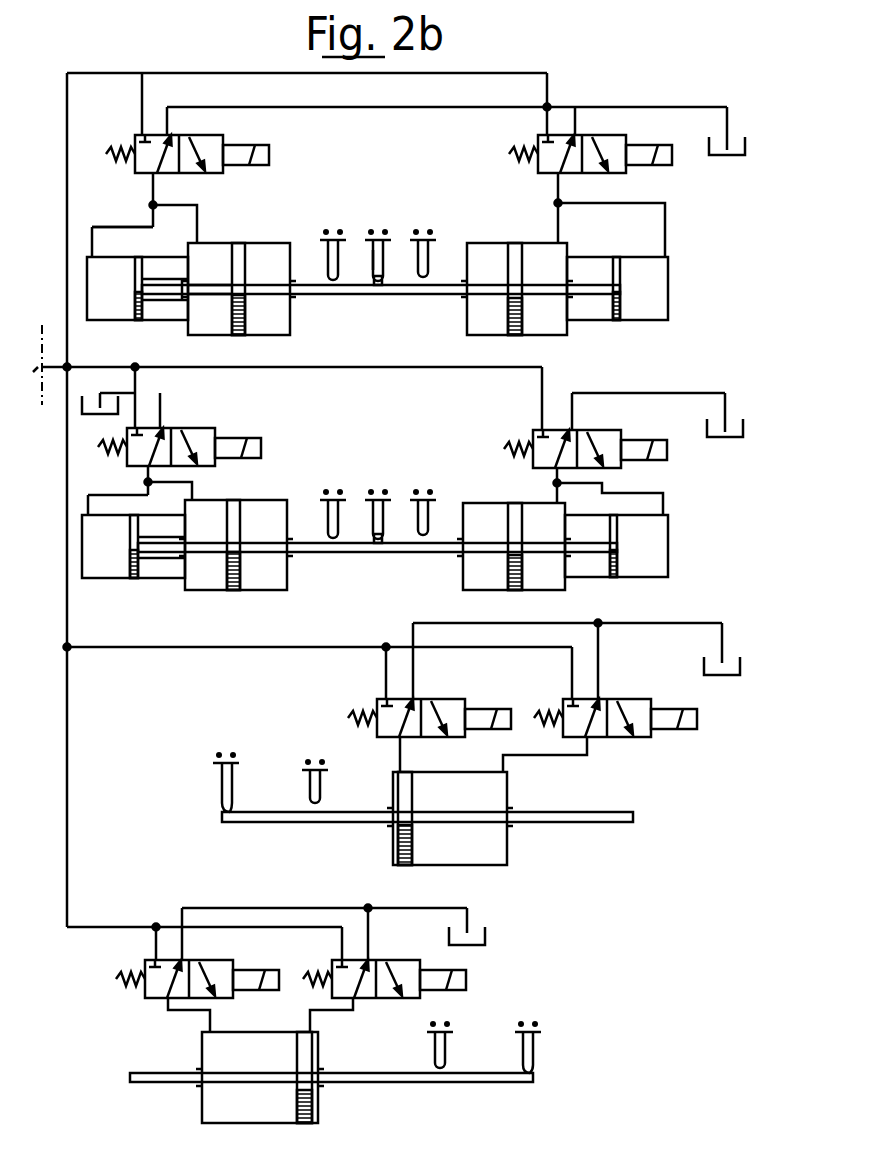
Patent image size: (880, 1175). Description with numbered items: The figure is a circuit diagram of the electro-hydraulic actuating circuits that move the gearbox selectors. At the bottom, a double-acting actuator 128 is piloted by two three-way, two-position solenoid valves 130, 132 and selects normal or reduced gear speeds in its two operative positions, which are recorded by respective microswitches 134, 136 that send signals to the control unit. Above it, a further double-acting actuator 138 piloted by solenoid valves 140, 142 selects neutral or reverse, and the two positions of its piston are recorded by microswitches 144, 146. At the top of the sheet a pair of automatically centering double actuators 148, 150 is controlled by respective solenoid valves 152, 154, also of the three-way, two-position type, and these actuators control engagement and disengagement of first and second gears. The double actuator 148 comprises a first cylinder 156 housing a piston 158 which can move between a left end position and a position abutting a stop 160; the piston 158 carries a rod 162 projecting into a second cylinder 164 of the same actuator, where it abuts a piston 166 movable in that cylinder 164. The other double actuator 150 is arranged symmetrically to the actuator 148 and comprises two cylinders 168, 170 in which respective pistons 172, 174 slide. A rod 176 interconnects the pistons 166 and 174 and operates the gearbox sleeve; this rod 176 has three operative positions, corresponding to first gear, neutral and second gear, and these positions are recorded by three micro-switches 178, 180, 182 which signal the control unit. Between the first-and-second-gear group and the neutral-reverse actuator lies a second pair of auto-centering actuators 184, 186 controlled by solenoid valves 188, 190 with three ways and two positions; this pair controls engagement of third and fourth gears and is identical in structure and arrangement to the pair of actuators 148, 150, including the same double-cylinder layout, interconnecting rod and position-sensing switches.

The double-acting actuator 128 is at (202, 1105).
The solenoid valve 130 is at (226, 998).
The solenoid valve 132 is at (398, 958).
The microswitch 134 is at (534, 1050).
The microswitch 136 is at (435, 1050).
The double-acting actuator 138 is at (475, 866).
The solenoid valve 140 is at (632, 698).
The solenoid valve 142 is at (460, 700).
The microswitch 144 is at (321, 787).
The microswitch 146 is at (222, 784).
The double actuator 148 is at (353, 295).
The double actuator 150 is at (559, 300).
The solenoid valve 152 is at (205, 140).
The solenoid valve 154 is at (546, 175).
The first cylinder 156 is at (103, 322).
The piston 158 is at (138, 262).
The stop 160 is at (148, 300).
The rod 162 is at (204, 288).
The second cylinder 164 is at (275, 338).
The piston 166 is at (246, 270).
The cylinder 168 is at (648, 322).
The cylinder 170 is at (548, 338).
The piston 172 is at (617, 263).
The piston 174 is at (510, 315).
The rod 176 is at (378, 295).
The micro-switch 178 is at (333, 278).
The micro-switch 180 is at (384, 258).
The micro-switch 182 is at (428, 262).
The auto-centering actuator 184 is at (202, 602).
The auto-centering actuator 186 is at (590, 588).
The solenoid valve 188 is at (210, 428).
The solenoid valve 190 is at (615, 430).